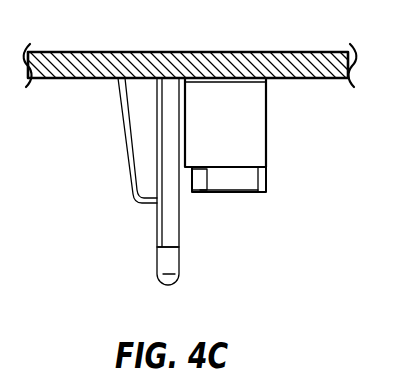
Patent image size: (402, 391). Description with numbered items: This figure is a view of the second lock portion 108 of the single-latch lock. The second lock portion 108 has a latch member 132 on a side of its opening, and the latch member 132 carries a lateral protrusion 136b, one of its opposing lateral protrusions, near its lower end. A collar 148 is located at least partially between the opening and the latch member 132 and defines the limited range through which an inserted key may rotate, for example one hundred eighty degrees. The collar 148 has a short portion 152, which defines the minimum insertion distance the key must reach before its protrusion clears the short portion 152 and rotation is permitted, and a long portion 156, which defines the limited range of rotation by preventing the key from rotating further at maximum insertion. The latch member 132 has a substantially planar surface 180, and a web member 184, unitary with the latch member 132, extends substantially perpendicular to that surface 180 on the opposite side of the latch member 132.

The second lock portion 108 is at (280, 200).
The latch member 132 is at (157, 228).
The lateral protrusion 136b is at (172, 243).
The collar 148 is at (253, 143).
The short portion 152 is at (250, 167).
The long portion 156 is at (217, 192).
The planar surface 180 is at (182, 267).
The web member 184 is at (137, 118).